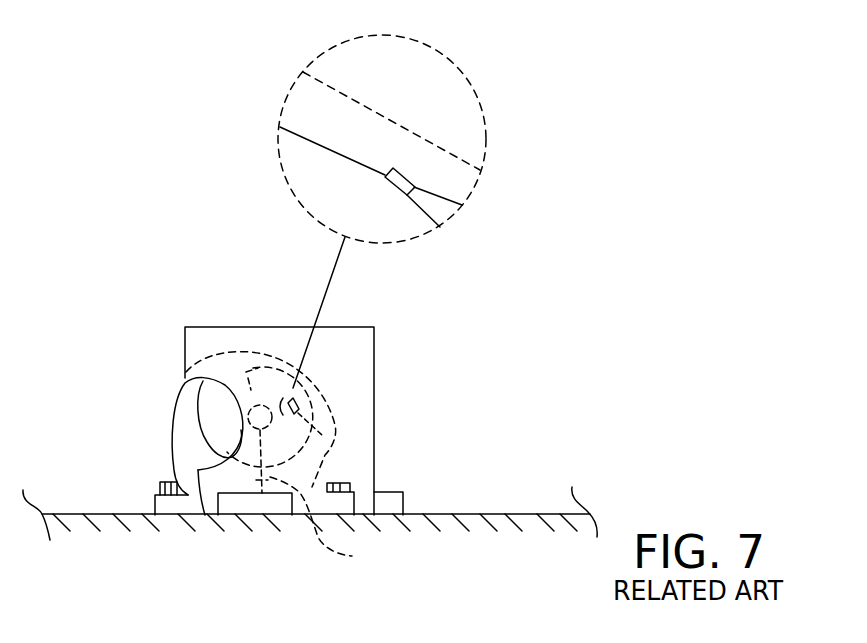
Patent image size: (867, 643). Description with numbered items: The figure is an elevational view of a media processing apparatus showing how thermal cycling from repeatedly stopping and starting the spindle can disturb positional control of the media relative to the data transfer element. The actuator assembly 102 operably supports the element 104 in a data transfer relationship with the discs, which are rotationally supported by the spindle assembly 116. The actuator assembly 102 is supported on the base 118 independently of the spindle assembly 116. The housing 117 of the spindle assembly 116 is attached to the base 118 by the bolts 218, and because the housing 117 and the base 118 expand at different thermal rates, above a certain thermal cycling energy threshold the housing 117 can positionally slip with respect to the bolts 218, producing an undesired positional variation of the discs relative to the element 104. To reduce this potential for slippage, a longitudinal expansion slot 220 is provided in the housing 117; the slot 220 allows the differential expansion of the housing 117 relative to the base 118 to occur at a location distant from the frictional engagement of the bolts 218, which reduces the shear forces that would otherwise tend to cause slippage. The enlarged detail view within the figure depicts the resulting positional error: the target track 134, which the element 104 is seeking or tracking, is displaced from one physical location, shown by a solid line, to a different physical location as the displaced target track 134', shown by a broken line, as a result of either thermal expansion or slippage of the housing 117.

The actuator assembly 102 is at (410, 345).
The element 104 is at (394, 188).
The spindle assembly 116 is at (235, 382).
The housing 117 is at (172, 430).
The base 118 is at (448, 505).
The target track 134 is at (313, 166).
The target track 134' is at (340, 95).
The bolts 218 is at (161, 482).
The longitudinal expansion slot 220 is at (333, 523).